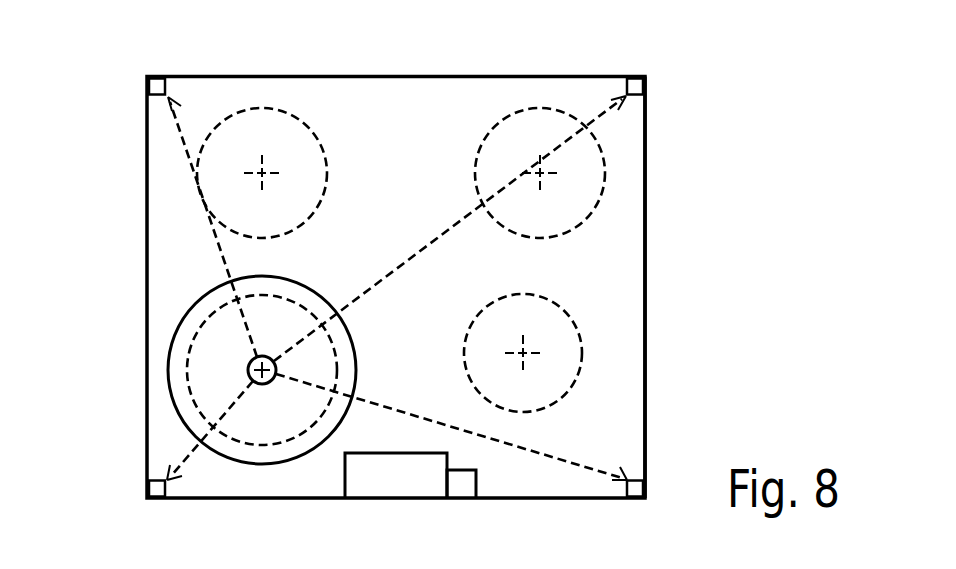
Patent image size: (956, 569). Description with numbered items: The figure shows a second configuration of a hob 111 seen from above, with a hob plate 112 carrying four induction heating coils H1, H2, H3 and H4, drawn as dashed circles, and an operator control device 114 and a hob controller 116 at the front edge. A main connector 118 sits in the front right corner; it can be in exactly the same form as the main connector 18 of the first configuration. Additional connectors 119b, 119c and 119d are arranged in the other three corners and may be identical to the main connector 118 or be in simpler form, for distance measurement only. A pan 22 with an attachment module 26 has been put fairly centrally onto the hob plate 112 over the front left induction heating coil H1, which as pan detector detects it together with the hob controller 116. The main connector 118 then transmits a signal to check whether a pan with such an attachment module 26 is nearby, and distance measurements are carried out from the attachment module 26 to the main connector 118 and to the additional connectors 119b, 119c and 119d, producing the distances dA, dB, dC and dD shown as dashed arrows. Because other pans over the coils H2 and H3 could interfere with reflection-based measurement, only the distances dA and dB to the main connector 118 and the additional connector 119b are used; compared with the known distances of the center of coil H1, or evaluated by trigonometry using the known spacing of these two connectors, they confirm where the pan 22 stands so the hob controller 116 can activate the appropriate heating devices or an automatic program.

The main connector 18 is at (463, 88).
The hob plate 112 is at (637, 128).
The hob 111 is at (735, 110).
The additional connector 119b is at (168, 490).
The additional connector 119c is at (167, 93).
The additional connector 119d is at (624, 92).
The main connector 118 is at (634, 482).
The pan 22 is at (220, 293).
The attachment module 26 is at (248, 364).
The operator control device 114 is at (382, 485).
The hob controller 116 is at (478, 483).
The induction heating coil H1 is at (187, 375).
The induction heating coil H2 is at (218, 137).
The induction heating coil H3 is at (608, 176).
The induction heating coil H4 is at (583, 353).
The distance dA is at (451, 427).
The distance dB is at (217, 430).
The distance dC is at (212, 227).
The distance dD is at (450, 228).